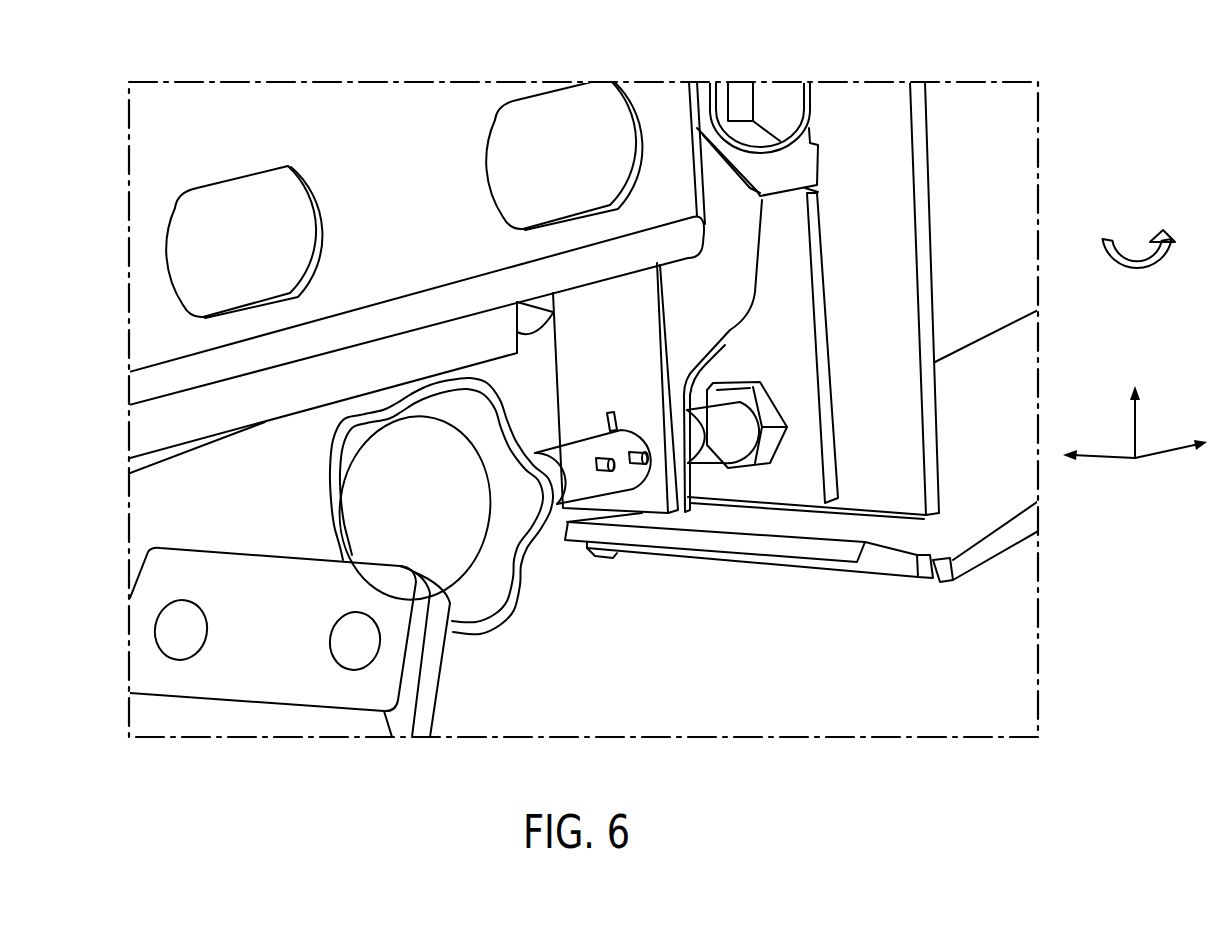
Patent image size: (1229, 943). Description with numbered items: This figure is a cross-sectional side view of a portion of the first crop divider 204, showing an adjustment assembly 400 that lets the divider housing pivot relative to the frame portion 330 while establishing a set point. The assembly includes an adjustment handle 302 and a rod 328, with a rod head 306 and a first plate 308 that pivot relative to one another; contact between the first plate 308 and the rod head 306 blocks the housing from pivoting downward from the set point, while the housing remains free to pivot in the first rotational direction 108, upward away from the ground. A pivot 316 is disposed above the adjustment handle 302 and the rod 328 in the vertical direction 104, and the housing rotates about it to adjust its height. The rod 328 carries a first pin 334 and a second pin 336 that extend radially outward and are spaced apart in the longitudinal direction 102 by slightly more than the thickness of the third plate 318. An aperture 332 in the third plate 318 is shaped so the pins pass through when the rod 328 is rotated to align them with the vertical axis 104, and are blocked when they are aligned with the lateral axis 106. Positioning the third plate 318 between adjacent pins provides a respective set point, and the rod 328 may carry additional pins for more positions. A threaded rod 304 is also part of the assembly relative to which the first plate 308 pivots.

The first crop divider 204 is at (684, 62).
The pivot 316 is at (813, 163).
The threaded rod 304 is at (930, 192).
The first plate 308 is at (825, 247).
The third plate 318 is at (755, 295).
The adjustment assembly 400 is at (871, 416).
The rod head 306 is at (727, 468).
The second pin 336 is at (647, 458).
The first pin 334 is at (612, 470).
The aperture 332 is at (622, 417).
The rod 328 is at (577, 448).
The frame portion 330 is at (308, 413).
The adjustment handle 302 is at (497, 613).
The first rotational direction 108 is at (1132, 282).
The vertical axis 104 is at (1137, 430).
The lateral axis 106 is at (1105, 458).
The longitudinal direction 102 is at (1167, 455).